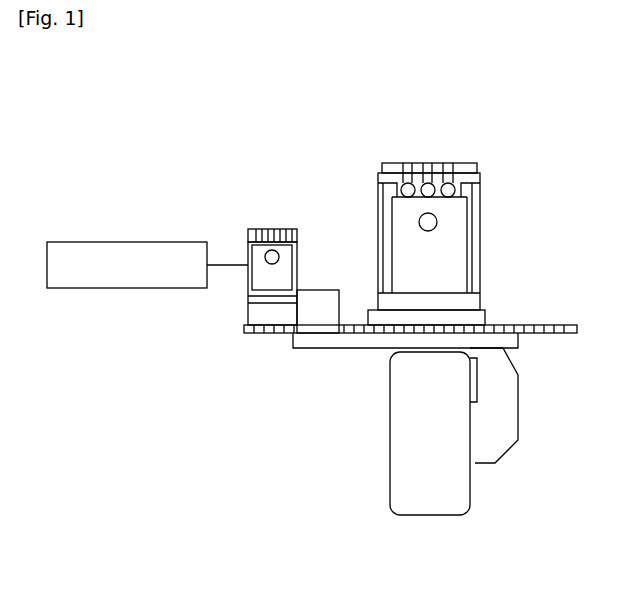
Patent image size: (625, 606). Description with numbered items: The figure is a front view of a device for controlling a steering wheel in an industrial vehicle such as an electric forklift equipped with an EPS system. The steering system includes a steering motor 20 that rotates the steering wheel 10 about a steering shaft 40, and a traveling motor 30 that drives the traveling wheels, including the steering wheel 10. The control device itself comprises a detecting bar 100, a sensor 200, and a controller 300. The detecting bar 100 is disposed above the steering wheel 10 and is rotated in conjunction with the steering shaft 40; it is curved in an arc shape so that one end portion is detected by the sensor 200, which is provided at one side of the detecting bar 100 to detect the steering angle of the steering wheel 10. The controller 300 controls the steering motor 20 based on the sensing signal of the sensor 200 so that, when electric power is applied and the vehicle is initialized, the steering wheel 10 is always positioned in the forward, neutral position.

The steering wheel 10 is at (400, 463).
The steering motor 20 is at (265, 228).
The traveling motor 30 is at (437, 162).
The steering shaft 40 is at (503, 420).
The detecting bar 100 is at (323, 350).
The sensor 200 is at (318, 289).
The controller 300 is at (148, 290).